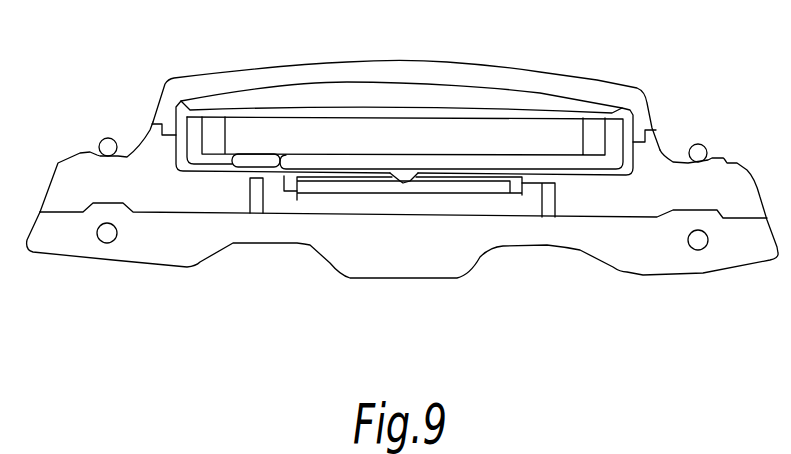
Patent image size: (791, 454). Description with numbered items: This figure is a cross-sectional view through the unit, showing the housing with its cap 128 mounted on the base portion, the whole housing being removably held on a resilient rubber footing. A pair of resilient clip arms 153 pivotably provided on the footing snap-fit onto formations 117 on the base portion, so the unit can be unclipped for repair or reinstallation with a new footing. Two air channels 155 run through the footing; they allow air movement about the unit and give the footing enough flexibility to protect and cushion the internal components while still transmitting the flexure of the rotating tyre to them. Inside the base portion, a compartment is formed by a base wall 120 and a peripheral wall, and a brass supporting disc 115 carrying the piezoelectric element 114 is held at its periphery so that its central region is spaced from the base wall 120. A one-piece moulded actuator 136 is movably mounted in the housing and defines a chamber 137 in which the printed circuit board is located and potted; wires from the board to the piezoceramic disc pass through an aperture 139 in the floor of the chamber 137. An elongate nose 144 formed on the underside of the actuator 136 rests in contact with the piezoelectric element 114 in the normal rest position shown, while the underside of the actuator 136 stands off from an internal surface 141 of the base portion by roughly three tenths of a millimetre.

The piezoelectric element 114 is at (350, 181).
The brass supporting disc 115 is at (513, 181).
The formations 117 is at (88, 150).
The base wall 120 is at (300, 193).
The cap 128 is at (403, 73).
The actuator 136 is at (615, 127).
The chamber 137 is at (524, 120).
The aperture 139 is at (252, 146).
The internal surface 141 is at (620, 180).
The nose 144 is at (403, 184).
The resilient clip arms 153 is at (111, 139).
The air channels 155 is at (241, 262).